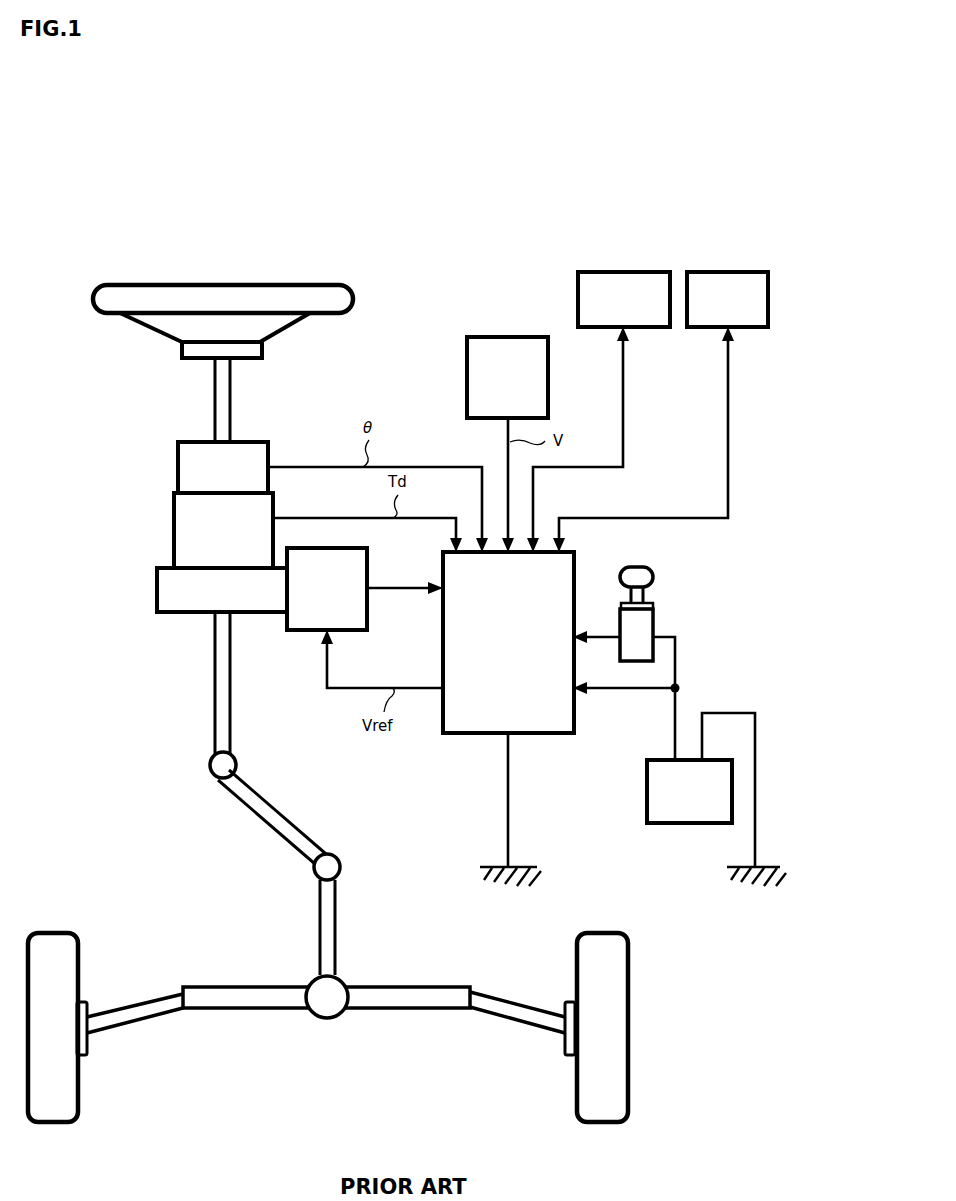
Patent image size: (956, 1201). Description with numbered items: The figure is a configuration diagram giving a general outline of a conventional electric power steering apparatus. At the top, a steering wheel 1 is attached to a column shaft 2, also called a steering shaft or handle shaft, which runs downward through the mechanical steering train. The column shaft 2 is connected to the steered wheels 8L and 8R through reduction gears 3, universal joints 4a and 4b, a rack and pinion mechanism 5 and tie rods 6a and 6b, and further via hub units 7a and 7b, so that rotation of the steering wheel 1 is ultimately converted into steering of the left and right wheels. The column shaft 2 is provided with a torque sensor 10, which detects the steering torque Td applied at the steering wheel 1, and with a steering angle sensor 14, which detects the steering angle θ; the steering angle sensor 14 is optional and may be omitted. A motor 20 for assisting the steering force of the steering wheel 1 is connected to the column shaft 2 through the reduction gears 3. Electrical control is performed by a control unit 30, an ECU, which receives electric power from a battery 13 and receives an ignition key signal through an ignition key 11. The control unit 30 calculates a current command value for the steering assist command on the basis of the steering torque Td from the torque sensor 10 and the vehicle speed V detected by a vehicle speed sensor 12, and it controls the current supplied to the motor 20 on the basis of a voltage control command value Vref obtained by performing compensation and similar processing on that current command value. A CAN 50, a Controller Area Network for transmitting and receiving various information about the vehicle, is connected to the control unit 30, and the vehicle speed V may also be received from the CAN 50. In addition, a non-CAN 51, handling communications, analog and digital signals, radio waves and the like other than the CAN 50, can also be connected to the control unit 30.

The steering wheel 1 is at (353, 298).
The column shaft 2 is at (213, 403).
The steering angle sensor 14 is at (178, 465).
The torque sensor 10 is at (174, 525).
The reduction gears 3 is at (157, 594).
The motor 20 is at (367, 555).
The control unit (ECU) 30 is at (574, 555).
The vehicle speed sensor 12 is at (548, 348).
The non-CAN 51 is at (651, 272).
The CAN (Controller Area Network) 50 is at (753, 272).
The ignition key 11 is at (653, 575).
The battery 13 is at (647, 782).
The universal joint 4a is at (210, 770).
The universal joint 4b is at (313, 873).
The rack and pinion mechanism 5 is at (340, 980).
The tie rod 6a is at (118, 1004).
The tie rod 6b is at (500, 1000).
The hub unit 7a is at (88, 1050).
The hub unit 7b is at (565, 1050).
The steered wheel 8L is at (78, 1110).
The steered wheel 8R is at (577, 1110).